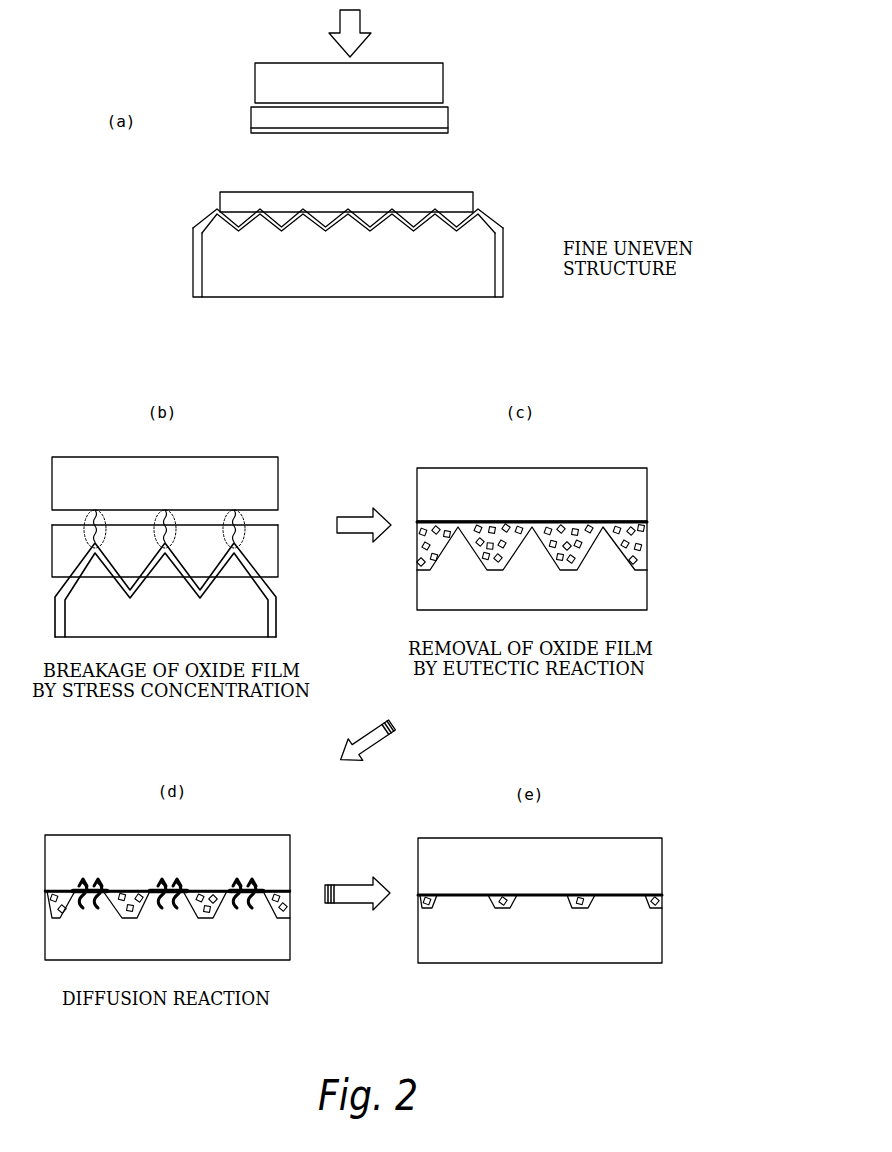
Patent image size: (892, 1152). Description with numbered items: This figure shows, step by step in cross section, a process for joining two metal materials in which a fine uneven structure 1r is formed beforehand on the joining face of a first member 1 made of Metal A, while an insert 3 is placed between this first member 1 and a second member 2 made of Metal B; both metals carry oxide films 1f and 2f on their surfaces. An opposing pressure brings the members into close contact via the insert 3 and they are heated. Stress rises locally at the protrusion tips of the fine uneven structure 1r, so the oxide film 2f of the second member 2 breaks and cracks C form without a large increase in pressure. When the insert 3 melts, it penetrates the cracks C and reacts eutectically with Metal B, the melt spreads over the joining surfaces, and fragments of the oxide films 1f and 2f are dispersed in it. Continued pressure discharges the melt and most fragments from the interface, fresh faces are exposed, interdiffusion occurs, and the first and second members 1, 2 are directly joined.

The first member 1 is at (473, 283).
The oxide film 1f is at (488, 222).
The fine uneven structure 1r is at (392, 222).
The second member 2 is at (443, 112).
The oxide film 2f is at (413, 130).
The insert 3 is at (427, 205).
The cracks C is at (237, 512).